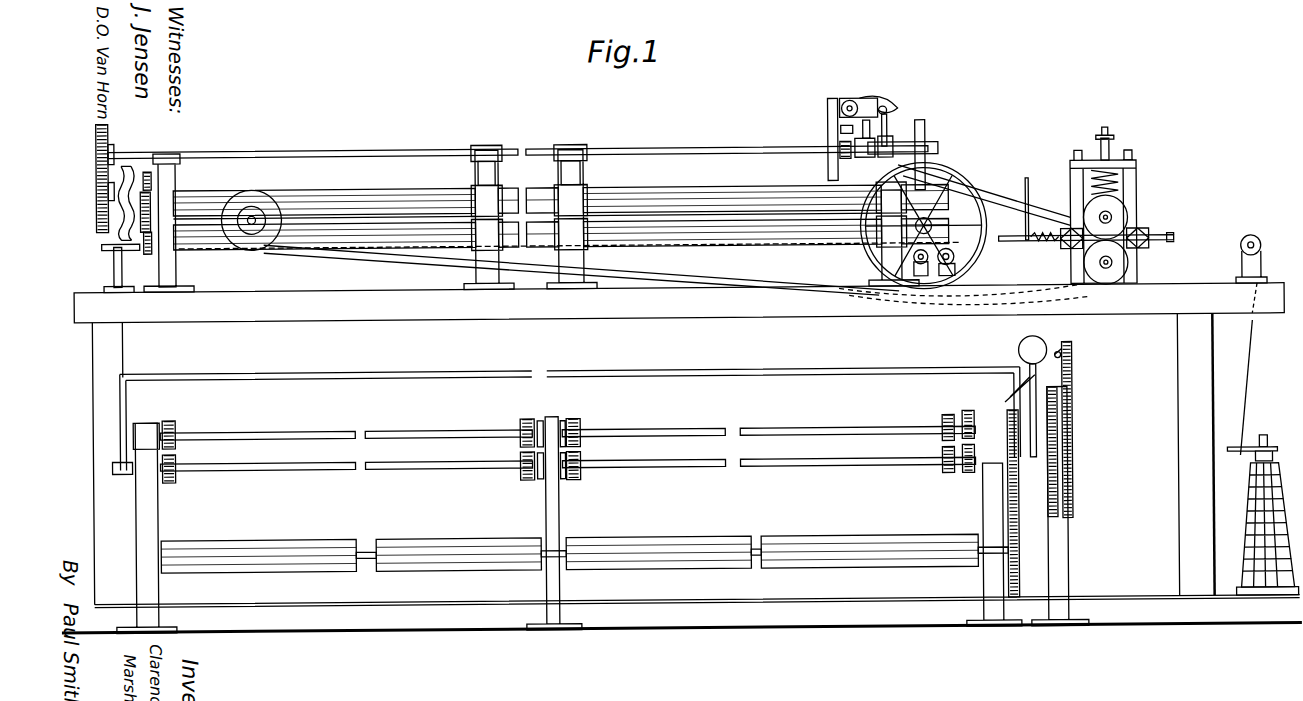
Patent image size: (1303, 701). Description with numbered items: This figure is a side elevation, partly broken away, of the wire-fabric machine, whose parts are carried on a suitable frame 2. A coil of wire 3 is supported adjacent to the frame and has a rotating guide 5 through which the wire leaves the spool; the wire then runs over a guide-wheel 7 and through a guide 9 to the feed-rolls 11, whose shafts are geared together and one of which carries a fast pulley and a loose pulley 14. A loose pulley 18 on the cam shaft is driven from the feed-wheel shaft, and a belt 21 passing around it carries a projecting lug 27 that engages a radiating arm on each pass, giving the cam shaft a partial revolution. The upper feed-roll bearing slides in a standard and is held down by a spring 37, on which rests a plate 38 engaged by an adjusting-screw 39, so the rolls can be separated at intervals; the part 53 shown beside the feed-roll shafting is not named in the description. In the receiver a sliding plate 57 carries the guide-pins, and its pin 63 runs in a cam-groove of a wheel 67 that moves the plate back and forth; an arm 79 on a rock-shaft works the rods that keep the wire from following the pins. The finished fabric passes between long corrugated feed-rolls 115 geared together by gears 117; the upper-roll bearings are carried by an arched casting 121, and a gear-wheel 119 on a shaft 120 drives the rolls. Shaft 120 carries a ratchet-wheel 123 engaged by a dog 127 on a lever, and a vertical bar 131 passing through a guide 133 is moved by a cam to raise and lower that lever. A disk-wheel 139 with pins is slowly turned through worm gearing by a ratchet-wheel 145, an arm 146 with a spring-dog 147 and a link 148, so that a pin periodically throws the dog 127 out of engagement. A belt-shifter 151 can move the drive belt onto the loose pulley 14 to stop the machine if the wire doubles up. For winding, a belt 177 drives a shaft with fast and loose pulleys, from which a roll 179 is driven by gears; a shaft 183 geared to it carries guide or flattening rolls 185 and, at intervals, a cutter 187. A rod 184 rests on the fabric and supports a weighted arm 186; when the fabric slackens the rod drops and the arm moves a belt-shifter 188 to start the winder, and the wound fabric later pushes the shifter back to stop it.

The frame 2 is at (1178, 455).
The coil of wire 3 is at (1248, 538).
The rotating guide 5 is at (1240, 452).
The guide-wheel 7 is at (1245, 243).
The guide 9 is at (1150, 238).
The feed-rolls 11 is at (1120, 212).
The loose pulley 14 is at (1158, 258).
The loose pulley 18 is at (98, 206).
The belt 21 is at (620, 282).
The projecting lug 27 is at (1000, 206).
The spring 37 is at (1120, 180).
The plate 38 is at (1072, 183).
The adjusting-screw 39 is at (1108, 140).
The bearing 53 is at (1045, 244).
The sliding plate 57 is at (105, 247).
The upwardly-projecting pin 63 is at (142, 228).
The cam-wheel 67 is at (127, 162).
The arm 79 is at (1005, 200).
The corrugated feed-rolls 115 is at (652, 200).
The gears 117 is at (160, 264).
The gear-wheel 119 is at (98, 150).
The shaft 120 is at (355, 147).
The arched casting 121 is at (478, 172).
The ratchet-wheel 123 is at (848, 160).
The dog 127 is at (843, 133).
The vertical bar 131 is at (927, 132).
The guide 133 is at (938, 150).
The disk-wheel 139 is at (830, 126).
The ratchet-wheel 145 is at (850, 100).
The arm 146 is at (889, 109).
The spring-dog 147 is at (885, 98).
The link 148 is at (892, 128).
The belt-shifter 151 is at (1028, 181).
The belt 177 is at (1048, 350).
The roll 179 is at (420, 540).
The shaft 183 is at (432, 429).
The rod 184 is at (648, 377).
The guide or flattening rolls 185 is at (178, 424).
The weighted arm 186 is at (1033, 381).
The cutter 187 is at (540, 420).
The belt-shifter 188 is at (1068, 357).